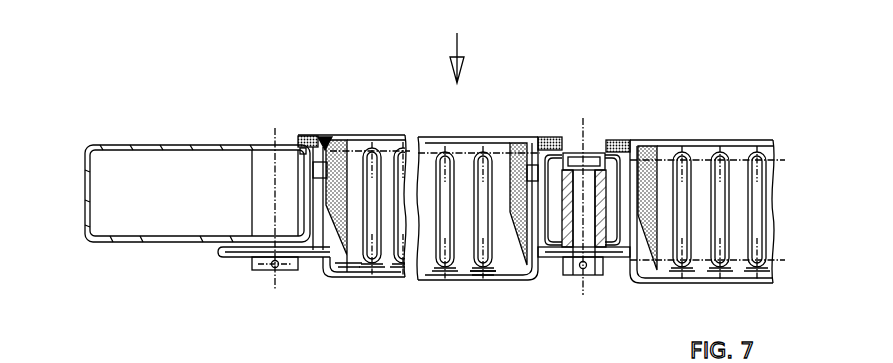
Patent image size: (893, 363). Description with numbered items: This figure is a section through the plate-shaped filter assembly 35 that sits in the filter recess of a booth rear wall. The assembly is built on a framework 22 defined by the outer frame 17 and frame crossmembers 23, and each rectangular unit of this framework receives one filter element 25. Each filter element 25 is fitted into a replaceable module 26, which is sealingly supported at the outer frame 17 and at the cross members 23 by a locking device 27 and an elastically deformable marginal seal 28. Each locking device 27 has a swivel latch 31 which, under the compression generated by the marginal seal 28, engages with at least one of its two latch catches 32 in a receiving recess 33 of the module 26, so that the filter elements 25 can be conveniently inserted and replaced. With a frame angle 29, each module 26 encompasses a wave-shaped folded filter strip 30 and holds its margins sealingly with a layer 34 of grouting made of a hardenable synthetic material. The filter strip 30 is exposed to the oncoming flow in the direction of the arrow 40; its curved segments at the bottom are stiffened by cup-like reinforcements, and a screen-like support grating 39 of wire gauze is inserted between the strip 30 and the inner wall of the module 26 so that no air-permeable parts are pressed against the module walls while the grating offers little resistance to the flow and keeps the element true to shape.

The outer frame 17 is at (167, 244).
The framework 22 is at (195, 138).
The frame crossmember 23 is at (548, 258).
The filter element 25 is at (386, 133).
The replaceable module 26 is at (336, 133).
The locking device 27 is at (246, 270).
The marginal seal 28 is at (300, 140).
The frame angle 29 is at (650, 140).
The wave-shaped filter strip 30 is at (488, 165).
The swivel latch 31 is at (305, 258).
The latch catch 32 is at (540, 262).
The receiving recess 33 is at (632, 252).
The layer of grouting 34 is at (357, 270).
The filter assembly 35 is at (561, 123).
The support grating 39 is at (462, 276).
The arrow 40 is at (474, 58).